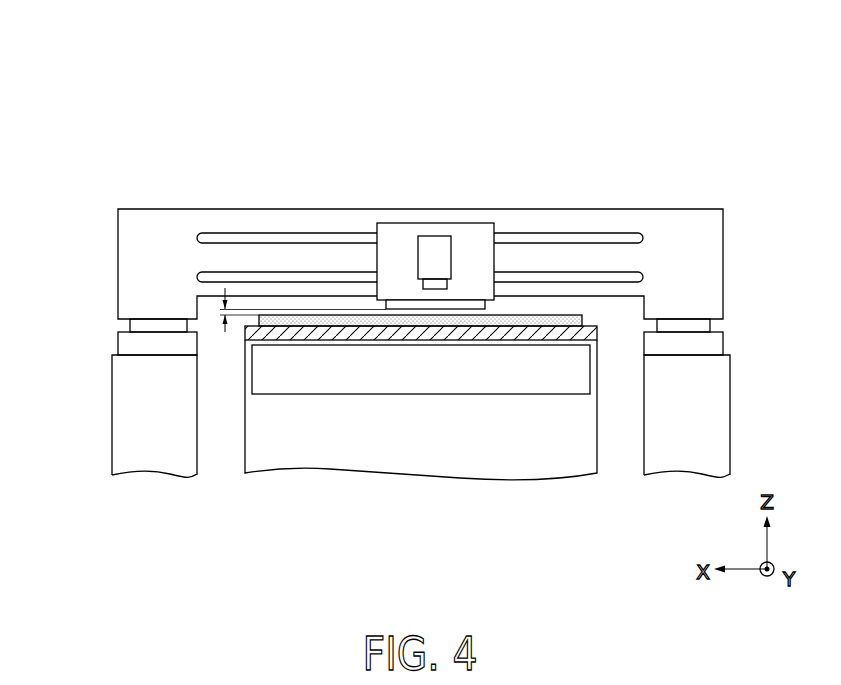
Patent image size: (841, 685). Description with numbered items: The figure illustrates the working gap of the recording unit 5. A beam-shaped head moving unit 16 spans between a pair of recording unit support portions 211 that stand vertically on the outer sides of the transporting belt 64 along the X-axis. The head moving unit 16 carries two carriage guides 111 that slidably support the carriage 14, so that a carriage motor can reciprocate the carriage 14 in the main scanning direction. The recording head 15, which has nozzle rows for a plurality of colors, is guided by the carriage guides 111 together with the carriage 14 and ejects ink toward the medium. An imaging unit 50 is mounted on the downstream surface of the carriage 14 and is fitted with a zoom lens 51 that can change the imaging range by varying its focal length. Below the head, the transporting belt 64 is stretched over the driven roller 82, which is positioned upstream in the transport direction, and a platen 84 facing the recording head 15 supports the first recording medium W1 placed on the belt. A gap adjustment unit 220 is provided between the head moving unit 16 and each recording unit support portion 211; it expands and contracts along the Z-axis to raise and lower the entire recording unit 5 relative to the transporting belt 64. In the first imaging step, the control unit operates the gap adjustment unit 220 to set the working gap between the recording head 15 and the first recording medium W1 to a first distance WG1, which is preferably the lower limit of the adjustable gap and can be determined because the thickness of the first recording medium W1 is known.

The recording unit 5 is at (681, 68).
The head moving unit 16 is at (681, 190).
The carriage guides 111 is at (296, 277).
The carriage 14 is at (480, 222).
The recording head 15 is at (487, 306).
The imaging unit 50 is at (435, 236).
The zoom lens 51 is at (421, 283).
The gap adjustment unit 220 is at (122, 325).
The recording unit support portions 211 is at (112, 413).
The driven roller 82 is at (445, 468).
The platen 84 is at (503, 393).
The transporting belt 64 is at (597, 326).
The first recording medium W1 is at (562, 314).
The first distance WG1 is at (224, 317).